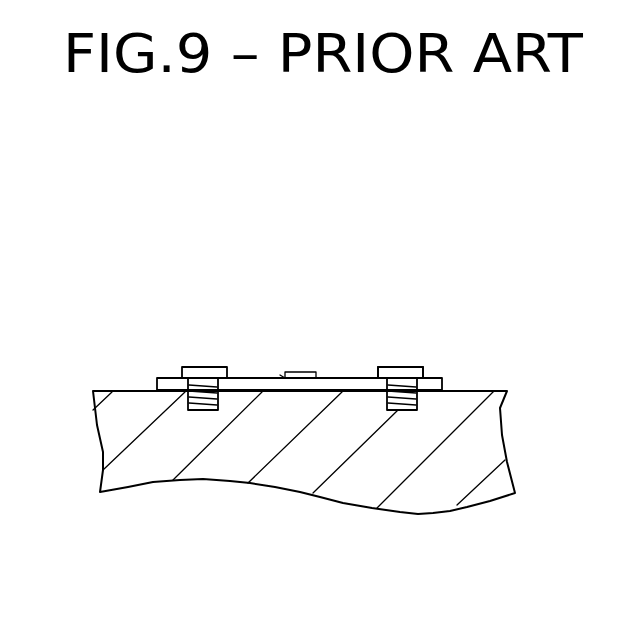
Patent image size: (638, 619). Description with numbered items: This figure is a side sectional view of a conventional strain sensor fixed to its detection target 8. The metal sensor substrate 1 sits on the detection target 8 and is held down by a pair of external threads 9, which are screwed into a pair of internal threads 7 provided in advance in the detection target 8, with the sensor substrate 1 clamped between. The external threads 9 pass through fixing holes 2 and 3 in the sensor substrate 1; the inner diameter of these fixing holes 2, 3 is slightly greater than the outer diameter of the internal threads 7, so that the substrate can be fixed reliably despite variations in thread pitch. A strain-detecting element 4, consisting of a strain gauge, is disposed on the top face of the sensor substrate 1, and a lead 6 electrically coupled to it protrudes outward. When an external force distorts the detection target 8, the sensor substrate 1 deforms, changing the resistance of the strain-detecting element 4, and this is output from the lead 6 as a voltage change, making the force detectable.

The sensor substrate 1 is at (240, 378).
The fixing hole 2 is at (423, 368).
The fixing hole 3 is at (197, 410).
The strain-detecting element 4 is at (313, 372).
The lead 6 is at (257, 330).
The internal threads 7 is at (398, 410).
The detection target 8 is at (477, 495).
The external threads 9 is at (184, 369).